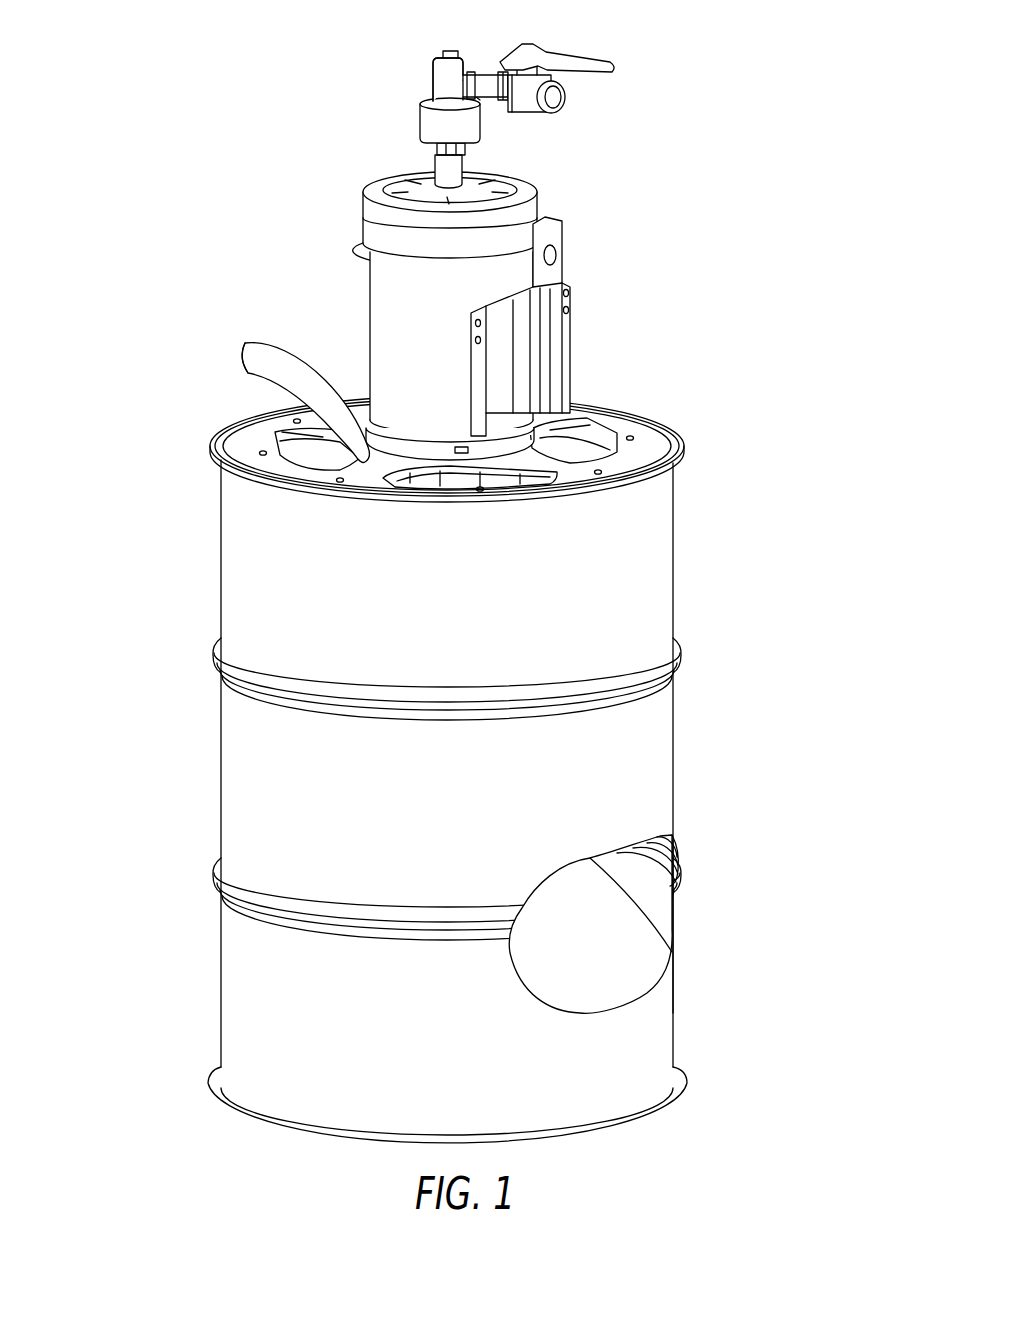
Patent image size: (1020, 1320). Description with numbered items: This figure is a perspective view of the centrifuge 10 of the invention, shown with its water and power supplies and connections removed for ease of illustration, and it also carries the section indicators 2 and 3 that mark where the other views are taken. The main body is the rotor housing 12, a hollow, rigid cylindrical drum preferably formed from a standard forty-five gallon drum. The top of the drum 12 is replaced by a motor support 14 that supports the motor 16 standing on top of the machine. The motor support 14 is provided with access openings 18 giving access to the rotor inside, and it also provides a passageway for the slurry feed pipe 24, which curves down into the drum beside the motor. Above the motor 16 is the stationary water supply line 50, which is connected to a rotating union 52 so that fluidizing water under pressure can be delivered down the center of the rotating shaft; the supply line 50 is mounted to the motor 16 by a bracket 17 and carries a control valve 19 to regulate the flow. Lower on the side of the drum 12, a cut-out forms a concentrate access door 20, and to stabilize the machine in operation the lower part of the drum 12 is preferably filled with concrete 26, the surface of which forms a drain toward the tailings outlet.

The centrifuge 10 is at (160, 537).
The rotor housing 12 is at (648, 580).
The motor support 14 is at (605, 422).
The motor 16 is at (370, 290).
The bracket 17 is at (580, 297).
The access openings 18 is at (250, 420).
The control valve 19 is at (612, 68).
The concentrate access door 20 is at (665, 840).
The slurry feed pipe 24 is at (265, 345).
The concrete 26 is at (622, 933).
The stationary water supply line 50 is at (572, 103).
The rotating union 52 is at (420, 112).
The section line 2 is at (178, 443).
The section line 3 is at (382, 93).